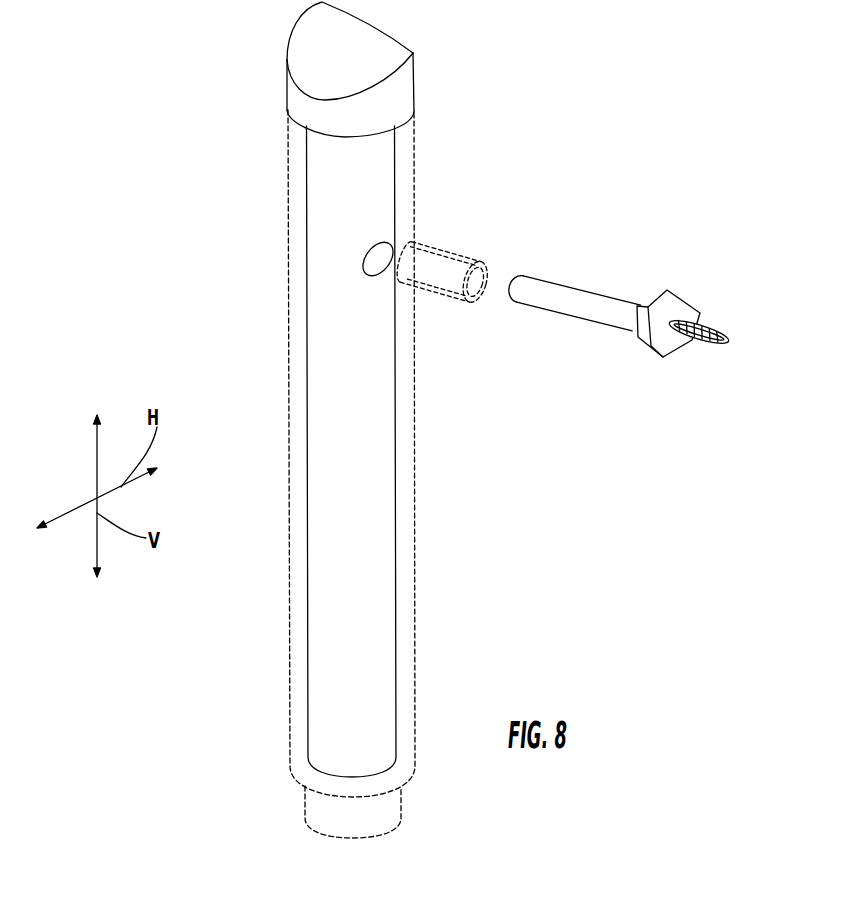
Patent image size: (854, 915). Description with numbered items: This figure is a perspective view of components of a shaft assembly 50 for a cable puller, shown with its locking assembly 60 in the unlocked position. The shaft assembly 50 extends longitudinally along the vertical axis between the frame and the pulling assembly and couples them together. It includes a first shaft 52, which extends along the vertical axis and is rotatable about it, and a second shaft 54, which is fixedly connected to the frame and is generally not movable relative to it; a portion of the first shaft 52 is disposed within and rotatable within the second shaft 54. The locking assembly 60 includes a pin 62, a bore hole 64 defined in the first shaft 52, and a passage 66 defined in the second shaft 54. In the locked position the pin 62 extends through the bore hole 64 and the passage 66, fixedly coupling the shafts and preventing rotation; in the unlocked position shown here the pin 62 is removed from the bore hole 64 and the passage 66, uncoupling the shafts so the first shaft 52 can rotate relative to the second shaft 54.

The shaft assembly 50 is at (554, 141).
The first shaft 52 is at (372, 190).
The second shaft 54 is at (417, 203).
The locking assembly 60 is at (553, 249).
The pin 62 is at (598, 316).
The bore hole 64 is at (375, 276).
The passage 66 is at (482, 288).